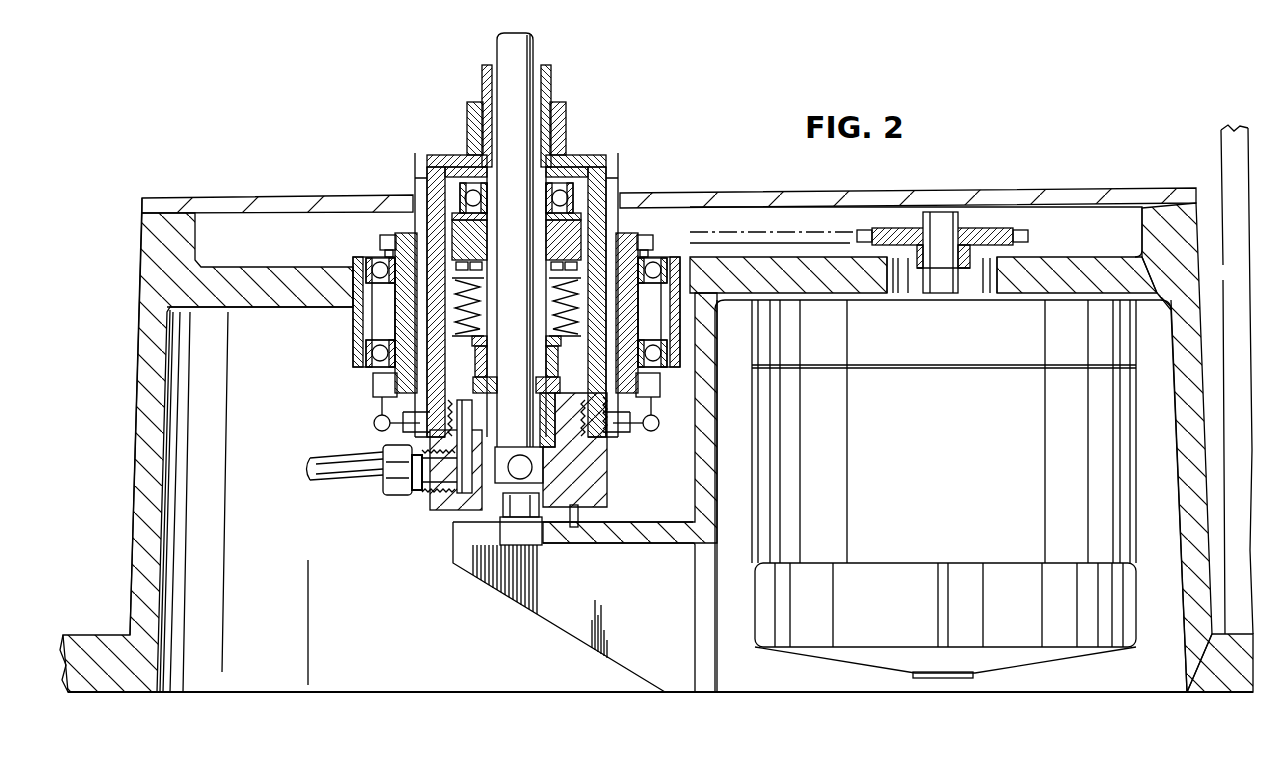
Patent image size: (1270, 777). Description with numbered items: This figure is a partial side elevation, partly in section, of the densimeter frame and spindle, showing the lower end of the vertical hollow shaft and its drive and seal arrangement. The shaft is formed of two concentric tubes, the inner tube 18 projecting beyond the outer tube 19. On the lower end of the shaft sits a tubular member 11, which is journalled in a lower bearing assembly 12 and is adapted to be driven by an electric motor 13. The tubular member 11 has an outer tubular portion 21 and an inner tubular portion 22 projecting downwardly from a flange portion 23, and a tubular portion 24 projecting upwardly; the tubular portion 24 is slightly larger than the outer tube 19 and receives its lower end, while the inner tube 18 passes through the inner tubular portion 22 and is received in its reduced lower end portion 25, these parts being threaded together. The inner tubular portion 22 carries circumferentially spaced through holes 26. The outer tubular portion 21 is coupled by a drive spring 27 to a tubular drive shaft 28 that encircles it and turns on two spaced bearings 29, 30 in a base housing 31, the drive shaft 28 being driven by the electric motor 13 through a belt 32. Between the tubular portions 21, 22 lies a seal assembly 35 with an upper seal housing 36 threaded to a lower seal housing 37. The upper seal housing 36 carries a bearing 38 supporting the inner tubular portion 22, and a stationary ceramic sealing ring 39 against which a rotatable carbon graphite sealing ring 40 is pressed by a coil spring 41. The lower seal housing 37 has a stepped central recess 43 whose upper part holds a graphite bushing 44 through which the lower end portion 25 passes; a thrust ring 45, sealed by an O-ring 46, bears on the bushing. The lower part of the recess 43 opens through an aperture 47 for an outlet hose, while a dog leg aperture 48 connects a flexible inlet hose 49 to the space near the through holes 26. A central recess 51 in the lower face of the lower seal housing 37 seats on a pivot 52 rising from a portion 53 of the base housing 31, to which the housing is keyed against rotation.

The tubular member 11 is at (417, 175).
The lower bearing assembly 12 is at (692, 295).
The electric motor 13 is at (1130, 510).
The inner tube 18 is at (508, 50).
The outer tube 19 is at (552, 72).
The outer tubular portion 21 is at (662, 388).
The inner tubular portion 22 is at (552, 322).
The flange portion 23 is at (573, 162).
The tubular portion 24 is at (568, 108).
The lower end portion 25 is at (440, 437).
The through holes 26 is at (375, 385).
The drive spring 27 is at (375, 422).
The tubular drive shaft 28 is at (366, 318).
The bearing 29 is at (372, 257).
The bearing 30 is at (355, 352).
The base housing 31 is at (155, 480).
The belt 32 is at (718, 238).
The seal assembly 35 is at (430, 240).
The upper seal housing 36 is at (447, 185).
The lower seal housing 37 is at (450, 510).
The bearing 38 is at (578, 200).
The stationary ceramic sealing ring 39 is at (608, 215).
The rotatable carbon graphite sealing ring 40 is at (622, 238).
The coil spring 41 is at (405, 235).
The stepped central recess 43 is at (400, 492).
The graphite bushing 44 is at (605, 458).
The thrust ring 45 is at (605, 440).
The O-ring 46 is at (560, 378).
The aperture 47 is at (545, 480).
The dog leg aperture 48 is at (412, 484).
The flexible inlet hose 49 is at (310, 465).
The central recess 51 is at (503, 530).
The pivot 52 is at (500, 515).
The portion of the base housing 53 is at (625, 540).